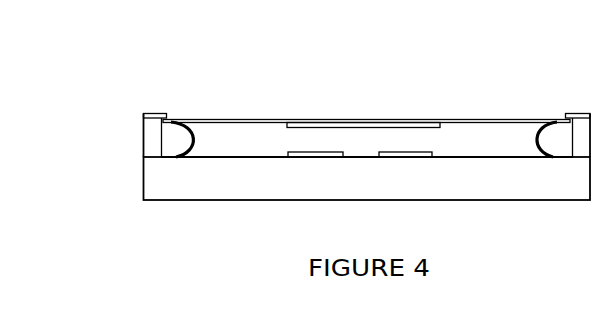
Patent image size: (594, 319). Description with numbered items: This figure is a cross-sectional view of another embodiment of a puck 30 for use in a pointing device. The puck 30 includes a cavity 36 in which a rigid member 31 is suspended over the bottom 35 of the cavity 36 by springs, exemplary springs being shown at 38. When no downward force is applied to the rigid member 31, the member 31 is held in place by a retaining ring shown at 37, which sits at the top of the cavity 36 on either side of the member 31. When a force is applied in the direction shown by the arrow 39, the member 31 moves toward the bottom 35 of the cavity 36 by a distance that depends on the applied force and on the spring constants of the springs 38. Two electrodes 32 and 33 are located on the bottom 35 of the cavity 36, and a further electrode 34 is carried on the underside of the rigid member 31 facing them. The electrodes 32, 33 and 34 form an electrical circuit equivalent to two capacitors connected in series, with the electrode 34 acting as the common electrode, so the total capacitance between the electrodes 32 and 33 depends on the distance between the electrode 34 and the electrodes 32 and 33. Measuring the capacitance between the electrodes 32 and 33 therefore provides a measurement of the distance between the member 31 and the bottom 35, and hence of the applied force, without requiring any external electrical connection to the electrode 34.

The puck 30 is at (118, 69).
The rigid member 31 is at (221, 118).
The electrode 32 is at (399, 158).
The electrode 33 is at (323, 158).
The electrode 34 is at (433, 122).
The bottom 35 is at (211, 153).
The cavity 36 is at (495, 126).
The retaining ring 37 is at (153, 111).
The springs 38 is at (536, 147).
The arrow 39 is at (363, 106).